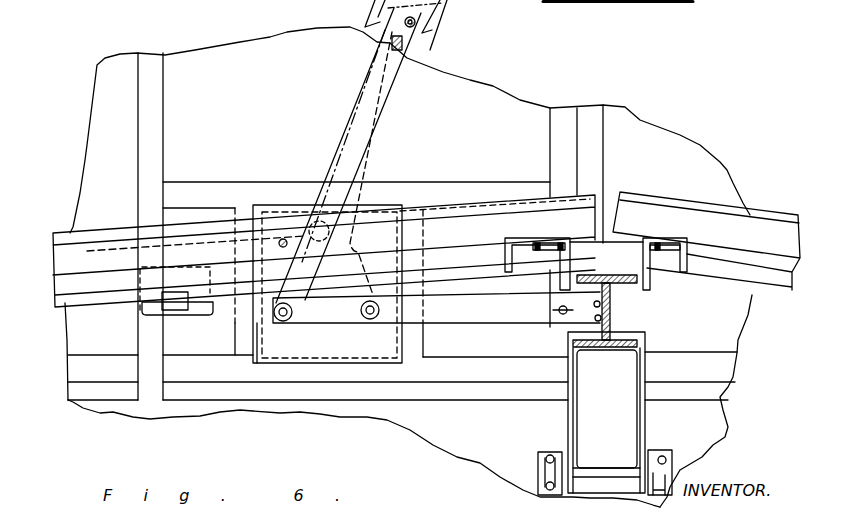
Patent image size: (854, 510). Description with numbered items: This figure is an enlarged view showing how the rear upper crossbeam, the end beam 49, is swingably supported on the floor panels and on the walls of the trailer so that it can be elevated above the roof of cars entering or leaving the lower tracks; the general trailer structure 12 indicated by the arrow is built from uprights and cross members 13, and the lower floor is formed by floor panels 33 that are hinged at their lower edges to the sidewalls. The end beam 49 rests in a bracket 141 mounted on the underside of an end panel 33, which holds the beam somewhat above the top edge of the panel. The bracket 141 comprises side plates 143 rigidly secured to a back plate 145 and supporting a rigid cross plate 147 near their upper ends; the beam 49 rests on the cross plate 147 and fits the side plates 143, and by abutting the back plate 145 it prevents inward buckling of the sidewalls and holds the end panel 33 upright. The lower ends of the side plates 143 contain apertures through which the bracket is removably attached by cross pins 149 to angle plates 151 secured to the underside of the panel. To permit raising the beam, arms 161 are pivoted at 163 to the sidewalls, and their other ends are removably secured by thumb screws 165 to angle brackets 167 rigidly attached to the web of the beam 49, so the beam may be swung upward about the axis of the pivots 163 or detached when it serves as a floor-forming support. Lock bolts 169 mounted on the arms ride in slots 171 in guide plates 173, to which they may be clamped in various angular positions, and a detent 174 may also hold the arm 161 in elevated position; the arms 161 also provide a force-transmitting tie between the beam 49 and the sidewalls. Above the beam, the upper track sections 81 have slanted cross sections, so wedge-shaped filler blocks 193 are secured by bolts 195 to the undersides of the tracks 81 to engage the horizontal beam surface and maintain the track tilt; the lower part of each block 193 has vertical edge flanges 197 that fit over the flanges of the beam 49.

The frame structure 12 is at (277, 54).
The uprights and cross members 13 is at (161, 103).
The floor panel 33 is at (713, 398).
The end beam 49 is at (443, 29).
The upper track section 81 is at (510, 197).
The bracket 141 is at (614, 411).
The side plate 143 is at (645, 362).
The back plate 145 is at (580, 440).
The cross plate 147 is at (597, 350).
The cross pin 149 is at (618, 467).
The angle plate 151 is at (652, 453).
The arm 161 is at (368, 135).
The pivot 163 is at (288, 322).
The thumb screw 165 is at (557, 310).
The angle bracket 167 is at (562, 320).
The lock bolt 169 is at (380, 309).
The slot 171 is at (382, 186).
The guide plate 173 is at (382, 352).
The detent 174 is at (208, 240).
The wedge-shaped filler block 193 is at (612, 266).
The bolt 195 is at (548, 258).
The vertical edge flange 197 is at (647, 288).